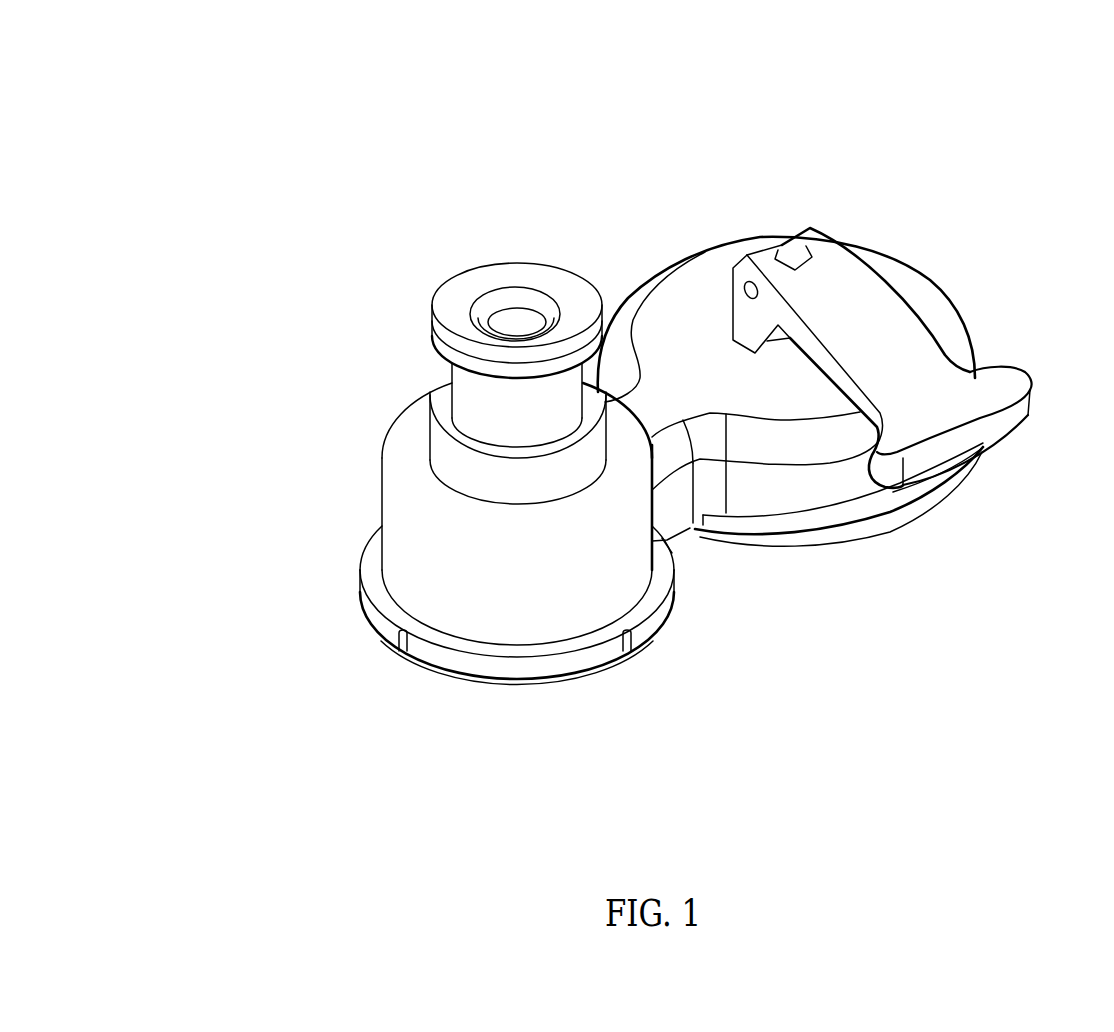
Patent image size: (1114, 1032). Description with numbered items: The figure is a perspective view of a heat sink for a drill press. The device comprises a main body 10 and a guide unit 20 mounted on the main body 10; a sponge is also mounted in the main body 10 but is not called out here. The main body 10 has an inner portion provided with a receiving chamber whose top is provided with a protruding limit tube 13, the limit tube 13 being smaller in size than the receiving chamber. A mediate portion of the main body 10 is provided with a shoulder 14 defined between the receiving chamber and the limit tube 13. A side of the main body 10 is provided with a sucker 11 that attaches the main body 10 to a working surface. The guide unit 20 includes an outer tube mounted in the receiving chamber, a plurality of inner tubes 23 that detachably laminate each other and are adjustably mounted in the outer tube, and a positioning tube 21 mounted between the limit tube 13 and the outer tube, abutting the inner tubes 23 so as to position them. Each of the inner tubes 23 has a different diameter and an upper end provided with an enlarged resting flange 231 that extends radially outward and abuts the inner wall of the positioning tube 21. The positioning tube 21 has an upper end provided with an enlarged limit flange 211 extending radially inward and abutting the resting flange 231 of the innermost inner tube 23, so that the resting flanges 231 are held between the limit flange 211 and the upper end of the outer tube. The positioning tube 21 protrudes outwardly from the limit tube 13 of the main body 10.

The main body 10 is at (840, 457).
The sucker 11 is at (867, 320).
The limit tube 13 is at (450, 463).
The shoulder 14 is at (540, 513).
The guide unit 20 is at (459, 230).
The positioning tube 21 is at (465, 392).
The limit flange 211 is at (515, 278).
The inner tubes 23 is at (525, 331).
The resting flange 231 is at (488, 316).